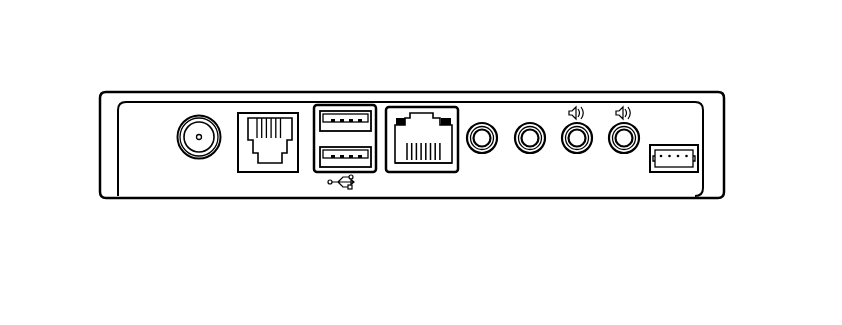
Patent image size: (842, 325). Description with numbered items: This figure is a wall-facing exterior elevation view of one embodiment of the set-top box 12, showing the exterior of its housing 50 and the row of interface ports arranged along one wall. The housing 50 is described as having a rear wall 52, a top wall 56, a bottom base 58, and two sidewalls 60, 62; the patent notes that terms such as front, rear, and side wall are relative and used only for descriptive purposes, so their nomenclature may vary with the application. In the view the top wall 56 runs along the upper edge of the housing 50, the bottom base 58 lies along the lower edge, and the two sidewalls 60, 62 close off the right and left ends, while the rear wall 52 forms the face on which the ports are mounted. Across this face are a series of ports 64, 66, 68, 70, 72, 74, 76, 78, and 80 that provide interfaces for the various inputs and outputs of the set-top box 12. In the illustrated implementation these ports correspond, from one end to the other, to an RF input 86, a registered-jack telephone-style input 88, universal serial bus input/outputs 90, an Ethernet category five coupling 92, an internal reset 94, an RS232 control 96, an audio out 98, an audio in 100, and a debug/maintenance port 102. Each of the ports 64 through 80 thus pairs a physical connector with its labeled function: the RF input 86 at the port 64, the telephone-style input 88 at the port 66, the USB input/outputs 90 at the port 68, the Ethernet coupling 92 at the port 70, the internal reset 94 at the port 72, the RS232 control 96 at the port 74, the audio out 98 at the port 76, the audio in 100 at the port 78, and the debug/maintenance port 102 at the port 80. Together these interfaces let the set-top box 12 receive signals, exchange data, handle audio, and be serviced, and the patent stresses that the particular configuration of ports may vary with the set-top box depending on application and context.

The set-top box 12 is at (103, 74).
The housing 50 is at (706, 86).
The rear wall 52 is at (138, 185).
The top wall 56 is at (166, 92).
The bottom base 58 is at (287, 198).
The sidewall 60 is at (725, 136).
The sidewall 62 is at (100, 138).
The port 64 is at (199, 117).
The port 66 is at (270, 117).
The port 68 is at (349, 112).
The port 70 is at (427, 112).
The port 72 is at (482, 125).
The port 74 is at (530, 126).
The port 76 is at (578, 126).
The port 78 is at (627, 126).
The port 80 is at (673, 163).
The RF input 86 is at (199, 157).
The RJ-45 input 88 is at (246, 175).
The universal serial bus (USB) input/outputs 90 is at (338, 165).
The Ethernet category 5 (Cat 5) coupling 92 is at (423, 171).
The internal reset 94 is at (481, 157).
The RS232 control 96 is at (528, 157).
The audio out 98 is at (578, 170).
The audio in 100 is at (628, 170).
The debug/maintenance port 102 is at (698, 162).